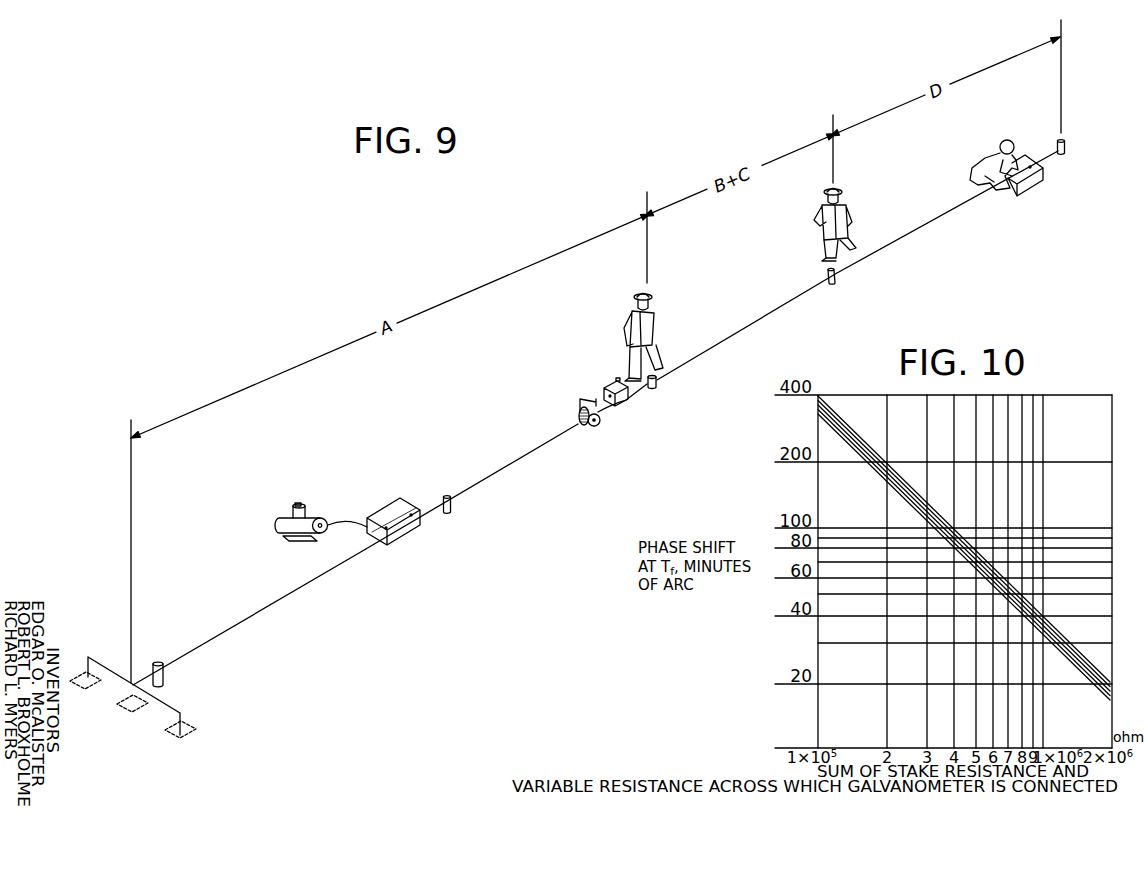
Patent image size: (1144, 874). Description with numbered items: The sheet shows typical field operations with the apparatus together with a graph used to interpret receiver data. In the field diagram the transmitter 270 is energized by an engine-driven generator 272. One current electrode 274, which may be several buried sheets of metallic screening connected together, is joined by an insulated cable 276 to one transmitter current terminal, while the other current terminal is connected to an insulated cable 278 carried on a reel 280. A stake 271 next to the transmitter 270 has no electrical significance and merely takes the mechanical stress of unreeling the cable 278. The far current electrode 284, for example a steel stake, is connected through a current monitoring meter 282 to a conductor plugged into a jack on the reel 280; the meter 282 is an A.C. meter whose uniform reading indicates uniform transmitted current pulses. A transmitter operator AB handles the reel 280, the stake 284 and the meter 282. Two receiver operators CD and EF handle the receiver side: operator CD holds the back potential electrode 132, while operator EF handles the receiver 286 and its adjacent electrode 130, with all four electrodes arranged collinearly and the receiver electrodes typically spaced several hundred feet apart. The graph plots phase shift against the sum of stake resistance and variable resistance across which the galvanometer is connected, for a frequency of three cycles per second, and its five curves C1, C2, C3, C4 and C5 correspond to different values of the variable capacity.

In FIG. 9, the receiver electrode 130 is at (1068, 152).
In FIG. 9, the back potential electrode 132 is at (833, 285).
In FIG. 9, the transmitter 270 is at (383, 511).
In FIG. 9, the stake 271 is at (452, 503).
In FIG. 9, the engine-driven generator 272 is at (277, 534).
In FIG. 9, the current electrode 274 is at (118, 712).
In FIG. 9, the insulated cable 276 is at (270, 606).
In FIG. 9, the insulated cable 278 is at (515, 463).
In FIG. 9, the reel 280 is at (591, 428).
In FIG. 9, the current monitoring meter 282 is at (626, 399).
In FIG. 9, the current electrode 284 is at (657, 381).
In FIG. 9, the receiver 286 is at (1011, 195).
In FIG. 9, the transmitter operator AB is at (633, 310).
In FIG. 9, the receiver operator CD is at (845, 208).
In FIG. 9, the receiver operator EF is at (1005, 140).
In FIG. 10, the curve C1 is at (864, 463).
In FIG. 10, the curve C2 is at (828, 428).
In FIG. 10, the curve C3 is at (893, 474).
In FIG. 10, the curve C4 is at (868, 446).
In FIG. 10, the curve C5 is at (837, 417).